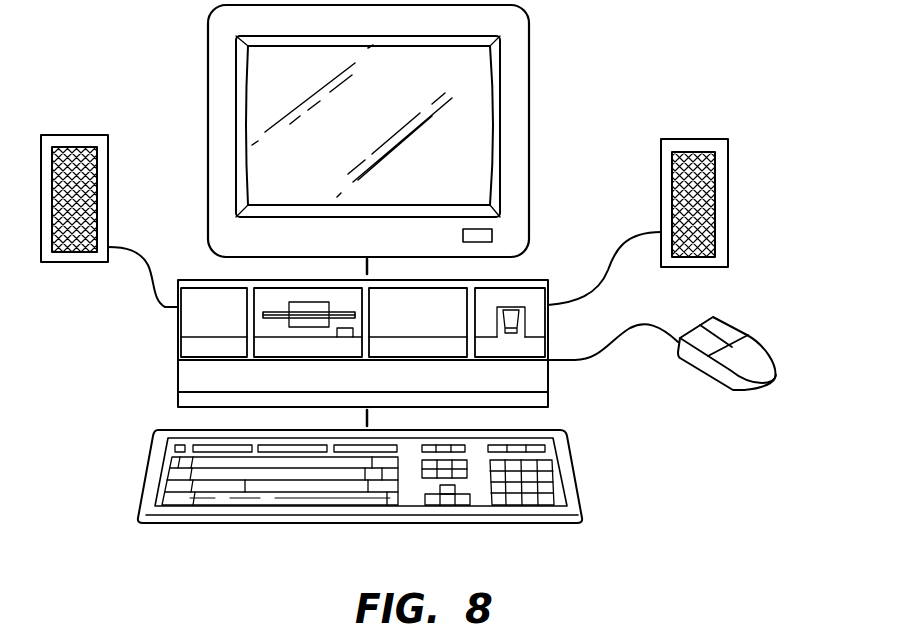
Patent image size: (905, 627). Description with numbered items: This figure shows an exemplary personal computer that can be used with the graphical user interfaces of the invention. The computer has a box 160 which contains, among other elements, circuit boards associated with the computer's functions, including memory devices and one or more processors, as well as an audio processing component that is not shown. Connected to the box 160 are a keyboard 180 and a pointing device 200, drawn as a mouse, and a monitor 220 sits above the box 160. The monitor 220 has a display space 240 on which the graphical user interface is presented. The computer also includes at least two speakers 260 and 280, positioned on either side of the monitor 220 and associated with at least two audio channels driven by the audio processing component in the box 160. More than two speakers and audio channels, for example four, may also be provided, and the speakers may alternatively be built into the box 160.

The box 160 is at (548, 383).
The keyboard 180 is at (575, 485).
The pointing device 200 is at (722, 377).
The monitor 220 is at (529, 155).
The display space 240 is at (482, 88).
The speaker 260 is at (80, 133).
The speaker 280 is at (710, 139).